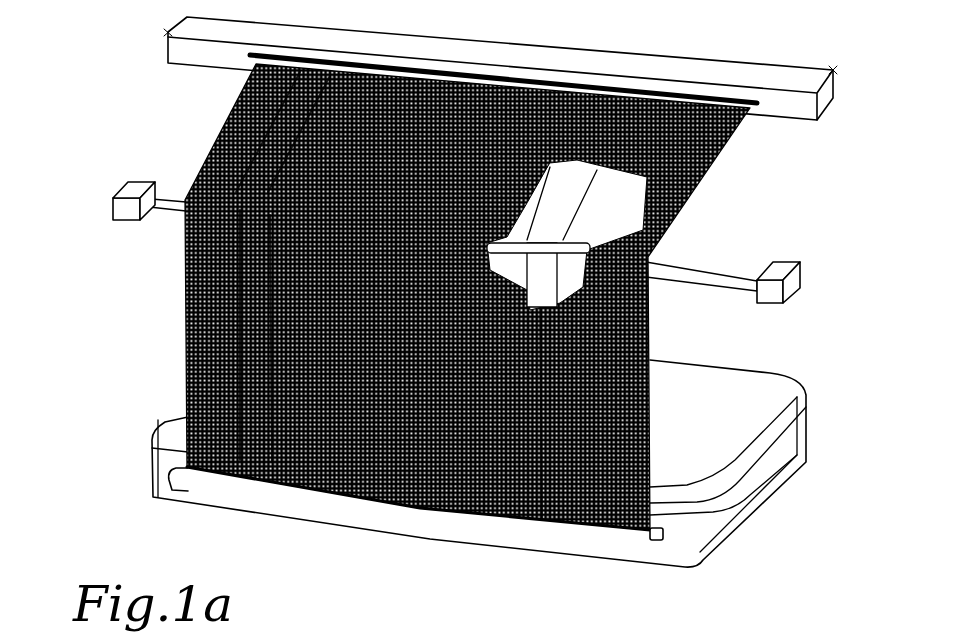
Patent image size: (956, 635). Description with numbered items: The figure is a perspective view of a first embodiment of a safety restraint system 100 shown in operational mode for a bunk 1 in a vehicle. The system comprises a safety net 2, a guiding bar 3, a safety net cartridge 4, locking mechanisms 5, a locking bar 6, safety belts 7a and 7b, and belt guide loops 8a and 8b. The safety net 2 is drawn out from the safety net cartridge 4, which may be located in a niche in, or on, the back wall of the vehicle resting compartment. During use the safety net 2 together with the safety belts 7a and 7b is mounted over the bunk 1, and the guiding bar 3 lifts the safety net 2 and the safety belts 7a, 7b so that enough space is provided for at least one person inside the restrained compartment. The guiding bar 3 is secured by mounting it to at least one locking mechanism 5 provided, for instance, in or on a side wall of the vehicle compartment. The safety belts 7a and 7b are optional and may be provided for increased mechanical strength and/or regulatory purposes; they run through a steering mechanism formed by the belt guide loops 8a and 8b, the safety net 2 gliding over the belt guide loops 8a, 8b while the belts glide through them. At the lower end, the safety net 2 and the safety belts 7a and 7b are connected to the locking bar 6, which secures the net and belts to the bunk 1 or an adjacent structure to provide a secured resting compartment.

The safety restraint system 100 is at (103, 81).
The bunk 1 is at (753, 377).
The safety net 2 is at (733, 135).
The guiding bar 3 is at (158, 213).
The safety net cartridge 4 is at (713, 74).
The locking mechanism 5 is at (143, 183).
The locking bar 6 is at (152, 495).
The safety belt 7a is at (317, 270).
The safety belt 7b is at (567, 234).
The belt guide loop 8a is at (334, 184).
The belt guide loop 8b is at (561, 254).